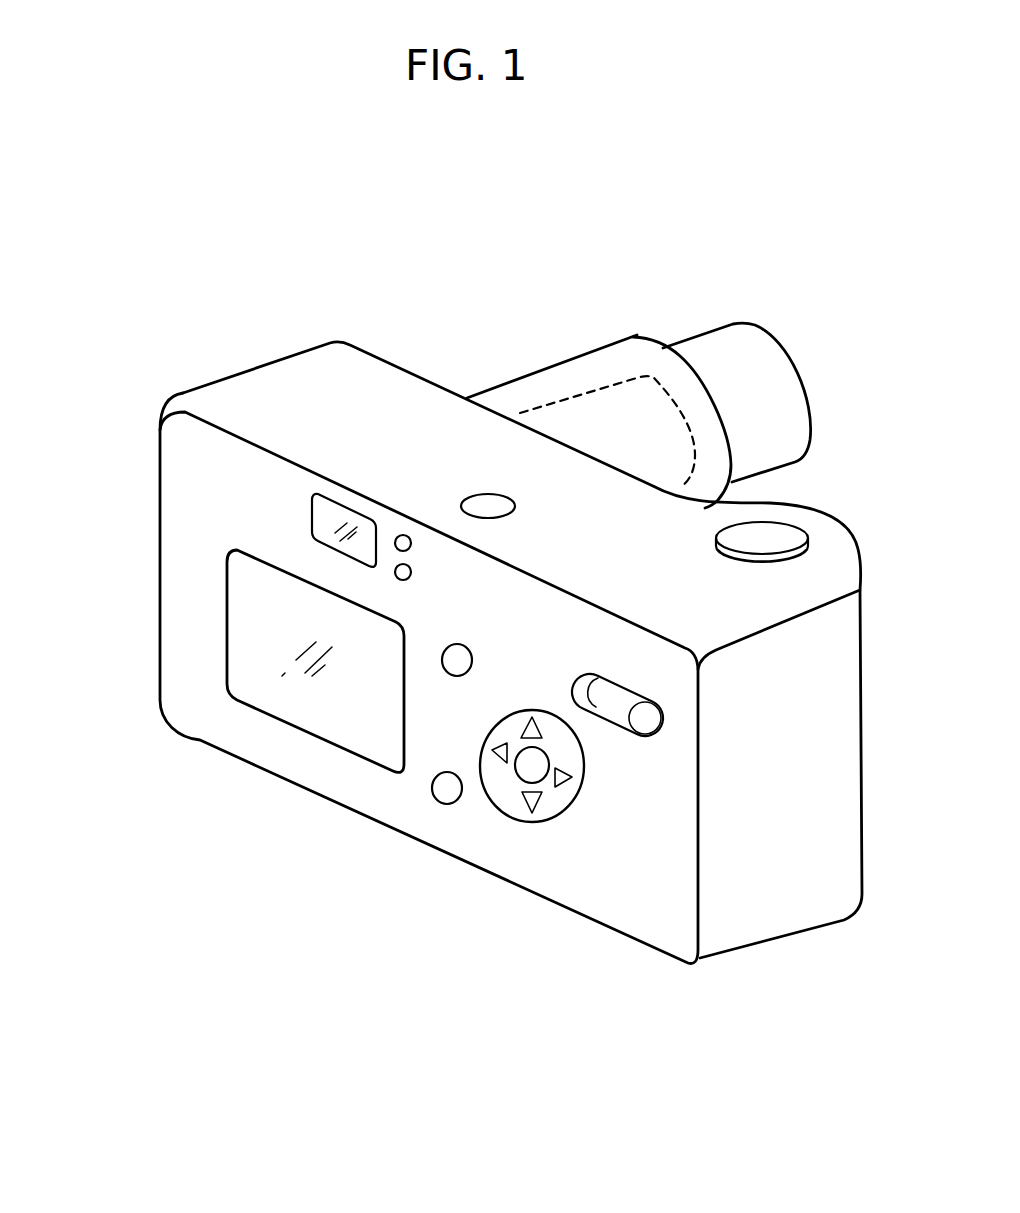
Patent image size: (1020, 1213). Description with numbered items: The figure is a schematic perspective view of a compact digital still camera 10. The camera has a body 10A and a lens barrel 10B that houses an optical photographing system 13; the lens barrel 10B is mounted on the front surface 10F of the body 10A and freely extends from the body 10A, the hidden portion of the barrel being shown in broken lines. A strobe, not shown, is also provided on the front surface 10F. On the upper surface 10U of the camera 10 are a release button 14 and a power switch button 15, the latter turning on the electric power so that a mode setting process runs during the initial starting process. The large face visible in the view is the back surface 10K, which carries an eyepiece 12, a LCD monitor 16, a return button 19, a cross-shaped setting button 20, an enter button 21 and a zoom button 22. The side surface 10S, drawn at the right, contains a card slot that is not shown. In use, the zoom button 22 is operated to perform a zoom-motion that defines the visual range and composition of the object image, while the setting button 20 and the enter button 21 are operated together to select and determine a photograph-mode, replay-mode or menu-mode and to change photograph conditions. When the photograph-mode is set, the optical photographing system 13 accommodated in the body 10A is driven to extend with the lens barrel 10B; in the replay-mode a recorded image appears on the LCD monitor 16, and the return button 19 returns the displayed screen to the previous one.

The digital still camera 10 is at (183, 323).
The body 10A is at (203, 388).
The back surface 10K is at (193, 468).
The upper surface 10U is at (302, 387).
The front surface 10F is at (415, 372).
The lens barrel 10B is at (597, 350).
The side surface 10S is at (780, 899).
The eyepiece 12 is at (313, 505).
The optical photographing system 13 is at (654, 378).
The release button 14 is at (763, 540).
The power switch button 15 is at (487, 505).
The LCD monitor 16 is at (260, 635).
The return button 19 is at (430, 788).
The cross-shaped setting button 20 is at (510, 810).
The enter button 21 is at (517, 778).
The zoom button 22 is at (622, 727).